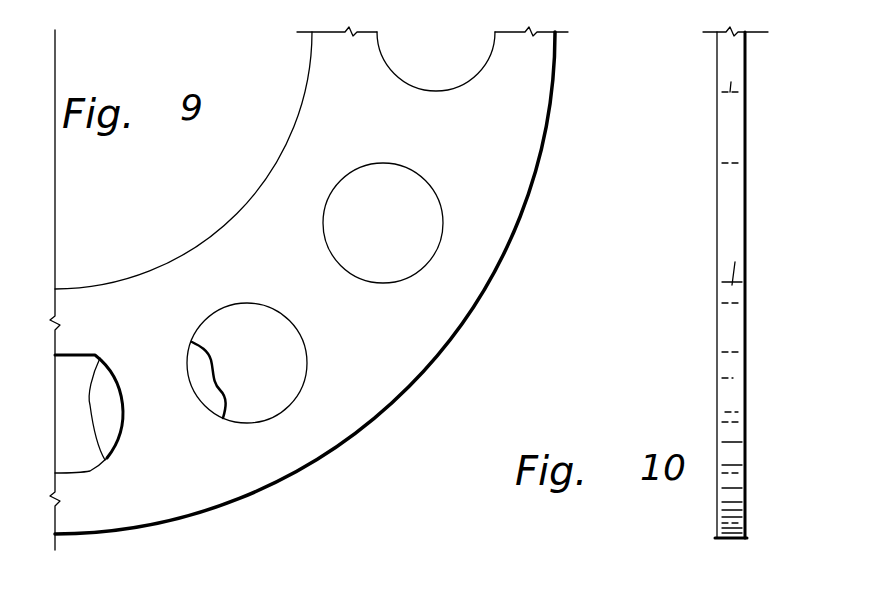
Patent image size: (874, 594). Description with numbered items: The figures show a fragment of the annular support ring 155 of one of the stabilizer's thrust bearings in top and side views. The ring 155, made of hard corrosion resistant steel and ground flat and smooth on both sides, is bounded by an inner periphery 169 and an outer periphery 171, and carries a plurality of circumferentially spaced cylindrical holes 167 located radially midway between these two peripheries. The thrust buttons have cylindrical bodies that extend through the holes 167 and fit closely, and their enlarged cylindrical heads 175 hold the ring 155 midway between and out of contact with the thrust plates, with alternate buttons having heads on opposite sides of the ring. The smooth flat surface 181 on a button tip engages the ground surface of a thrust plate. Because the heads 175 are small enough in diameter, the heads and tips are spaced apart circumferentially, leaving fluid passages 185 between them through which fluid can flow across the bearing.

In FIG. 9, the support ring 155 is at (520, 127).
In FIG. 10, the support ring 155 is at (732, 217).
In FIG. 9, the cylindrical holes 167 is at (393, 71).
In FIG. 10, the cylindrical holes 167 is at (730, 92).
In FIG. 9, the inner periphery 169 is at (145, 270).
In FIG. 10, the inner periphery 169 is at (736, 272).
In FIG. 9, the outer periphery 171 is at (537, 164).
In FIG. 10, the outer periphery 171 is at (729, 539).
In FIG. 9, the cylindrical heads 175 is at (107, 380).
In FIG. 9, the smooth flat surface 181 is at (197, 365).
In FIG. 9, the fluid passages 185 is at (150, 393).